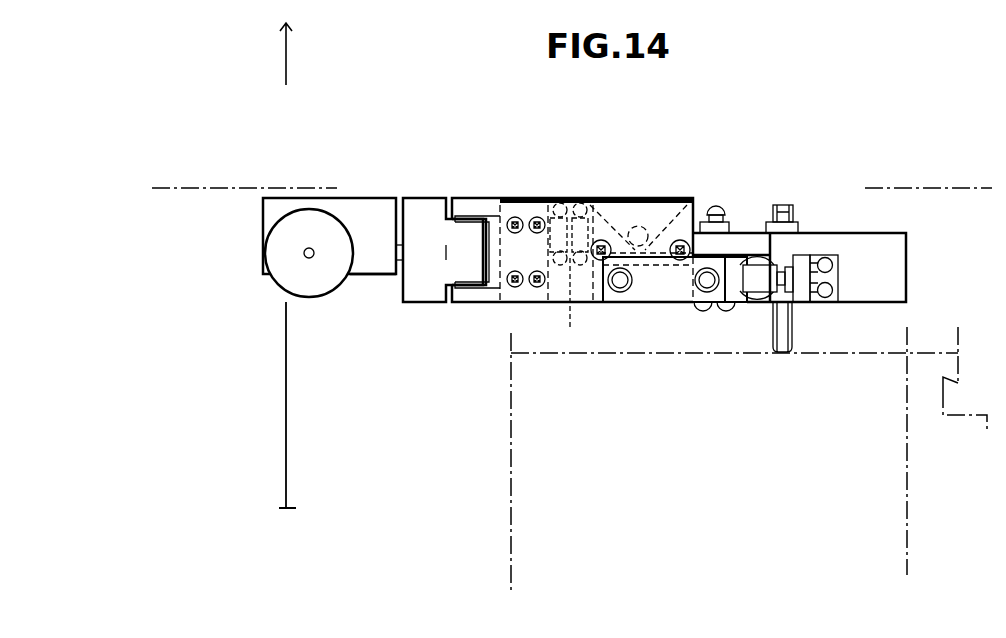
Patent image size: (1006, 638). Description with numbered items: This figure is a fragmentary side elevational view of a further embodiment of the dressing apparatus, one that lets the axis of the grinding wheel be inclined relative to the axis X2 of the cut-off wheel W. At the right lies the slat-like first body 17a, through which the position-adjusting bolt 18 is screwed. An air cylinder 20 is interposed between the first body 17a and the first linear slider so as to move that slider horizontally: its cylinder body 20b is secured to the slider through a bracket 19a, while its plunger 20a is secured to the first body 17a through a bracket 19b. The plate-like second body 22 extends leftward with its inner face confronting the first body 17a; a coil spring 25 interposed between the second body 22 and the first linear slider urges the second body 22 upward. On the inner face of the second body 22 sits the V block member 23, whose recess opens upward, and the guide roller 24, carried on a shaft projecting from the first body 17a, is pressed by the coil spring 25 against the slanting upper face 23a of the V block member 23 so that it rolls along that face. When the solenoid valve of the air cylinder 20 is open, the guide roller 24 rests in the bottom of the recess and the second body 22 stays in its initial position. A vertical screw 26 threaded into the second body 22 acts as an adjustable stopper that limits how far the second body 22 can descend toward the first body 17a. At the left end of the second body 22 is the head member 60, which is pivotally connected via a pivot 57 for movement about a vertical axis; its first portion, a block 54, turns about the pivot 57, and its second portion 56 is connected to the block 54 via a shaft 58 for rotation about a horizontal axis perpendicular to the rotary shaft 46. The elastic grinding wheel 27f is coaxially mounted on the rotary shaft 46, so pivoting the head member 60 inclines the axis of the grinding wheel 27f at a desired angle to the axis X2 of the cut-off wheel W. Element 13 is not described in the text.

The base frame 13 is at (508, 470).
The first body 17a is at (812, 232).
The bolt 18 is at (795, 323).
The bracket 19a is at (740, 303).
The bracket 19b is at (836, 277).
The air cylinder 20 is at (630, 311).
The plunger 20a is at (768, 305).
The cylinder body 20b is at (672, 304).
The second body 22 is at (531, 208).
The V block member 23 is at (594, 300).
The slanting upper face 23a is at (611, 210).
The guide roller 24 is at (646, 224).
The coil spring 25 is at (566, 258).
The vertical screw 26 is at (718, 210).
The grinding wheel 27f is at (322, 284).
The rotary shaft 46 is at (305, 257).
The block 54 is at (422, 206).
The second portion 56 is at (372, 266).
The pivot 57 is at (468, 217).
The shaft 58 is at (405, 254).
The head member 60 is at (380, 192).
The cut-off wheel W is at (284, 460).
The axis of the cut-off wheel X2 is at (559, 190).